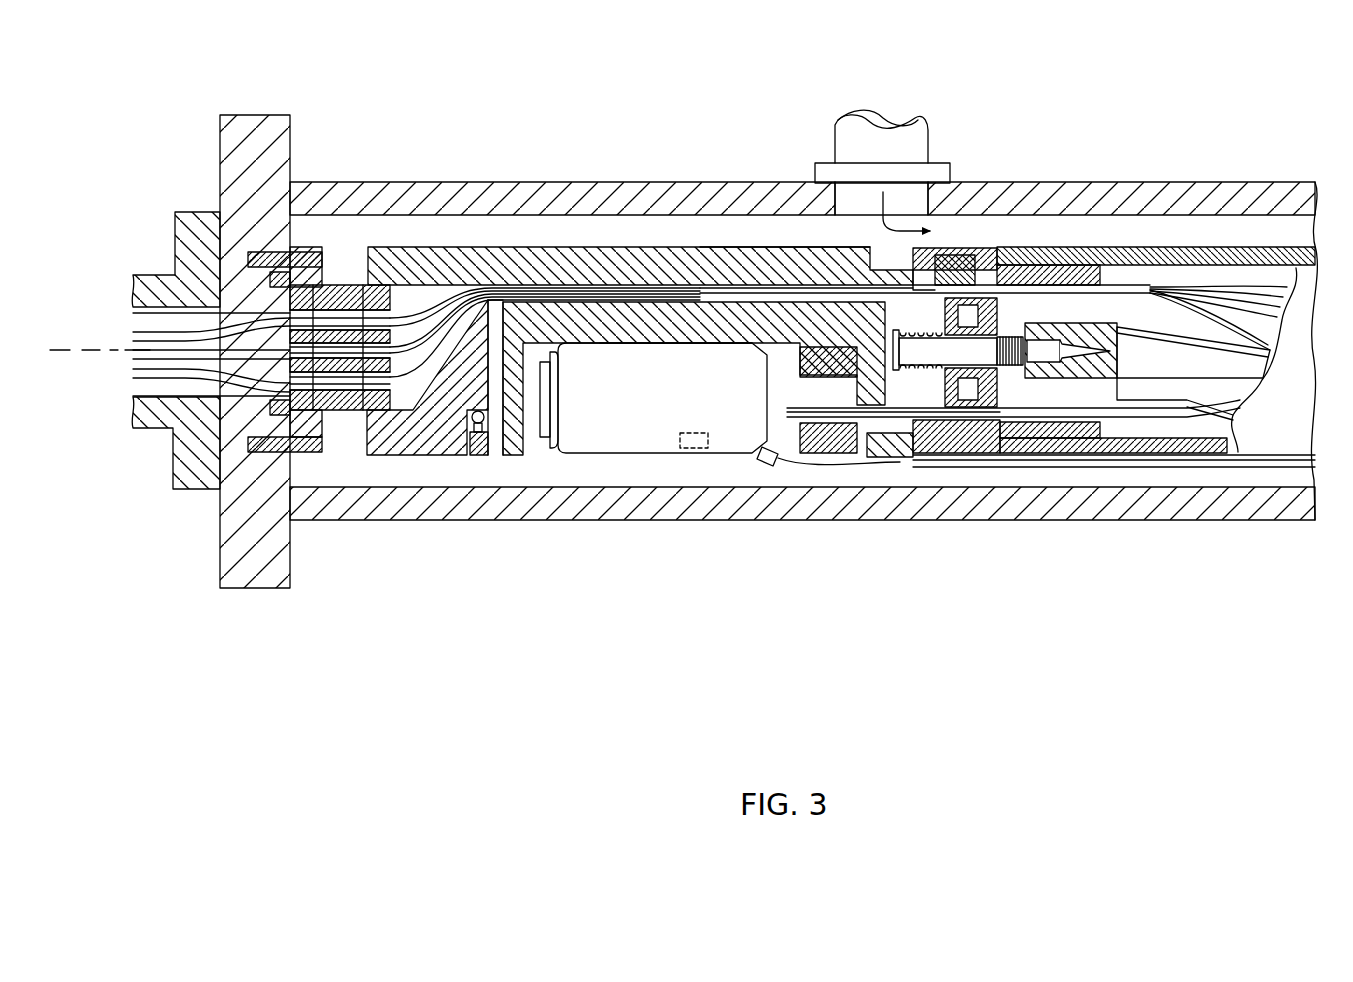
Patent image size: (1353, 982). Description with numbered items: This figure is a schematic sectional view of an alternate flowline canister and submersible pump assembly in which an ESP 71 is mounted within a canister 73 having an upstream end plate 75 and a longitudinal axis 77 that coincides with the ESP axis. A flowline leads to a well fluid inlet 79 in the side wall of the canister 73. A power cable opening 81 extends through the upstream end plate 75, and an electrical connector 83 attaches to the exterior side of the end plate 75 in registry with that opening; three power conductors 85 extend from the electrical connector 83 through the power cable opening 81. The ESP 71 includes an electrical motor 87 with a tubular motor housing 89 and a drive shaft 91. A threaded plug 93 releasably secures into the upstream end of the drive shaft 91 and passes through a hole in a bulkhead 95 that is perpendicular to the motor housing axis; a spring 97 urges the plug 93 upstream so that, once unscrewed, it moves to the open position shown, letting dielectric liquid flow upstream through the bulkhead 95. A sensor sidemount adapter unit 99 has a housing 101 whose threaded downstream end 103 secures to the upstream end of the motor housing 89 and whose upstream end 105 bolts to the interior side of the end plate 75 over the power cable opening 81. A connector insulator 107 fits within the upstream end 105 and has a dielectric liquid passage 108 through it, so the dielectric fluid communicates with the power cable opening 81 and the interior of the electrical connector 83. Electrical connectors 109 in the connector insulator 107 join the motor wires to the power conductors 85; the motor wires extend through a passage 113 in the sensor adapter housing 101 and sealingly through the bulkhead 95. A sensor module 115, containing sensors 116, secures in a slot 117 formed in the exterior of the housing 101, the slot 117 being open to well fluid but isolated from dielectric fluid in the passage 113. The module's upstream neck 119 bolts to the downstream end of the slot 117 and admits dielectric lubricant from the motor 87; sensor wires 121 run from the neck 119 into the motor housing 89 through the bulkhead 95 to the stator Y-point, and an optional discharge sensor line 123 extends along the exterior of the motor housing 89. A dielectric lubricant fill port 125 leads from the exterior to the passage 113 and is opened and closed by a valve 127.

The ESP 71 is at (973, 238).
The canister 73 is at (538, 182).
The upstream end plate 75 is at (291, 125).
The longitudinal axis 77 is at (75, 350).
The well fluid inlet 79 is at (918, 197).
The power cable opening 81 is at (150, 380).
The electrical connector 83 is at (175, 458).
The power conductors 85 is at (240, 320).
The electrical motor 87 is at (1148, 250).
The motor housing 89 is at (1095, 242).
The drive shaft 91 is at (1252, 335).
The threaded plug 93 is at (1030, 400).
The bulkhead 95 is at (1003, 380).
The spring 97 is at (905, 420).
The sensor sidemount adapter unit 99 is at (665, 232).
The sensor adapter housing 101 is at (825, 250).
The threaded downstream end 103 is at (1055, 400).
The upstream end 105 is at (340, 275).
The connector insulator 107 is at (380, 300).
The dielectric liquid passage 108 is at (340, 413).
The electrical connectors 109 is at (372, 420).
The passage 113 is at (778, 275).
The sensor module 115 is at (590, 443).
The sensors 116 is at (700, 450).
The slot 117 is at (652, 348).
The upstream neck 119 is at (835, 455).
The sensor wires 121 is at (1185, 420).
The discharge sensor line 123 is at (772, 460).
The dielectric lubricant fill port 125 is at (497, 372).
The valve 127 is at (480, 455).